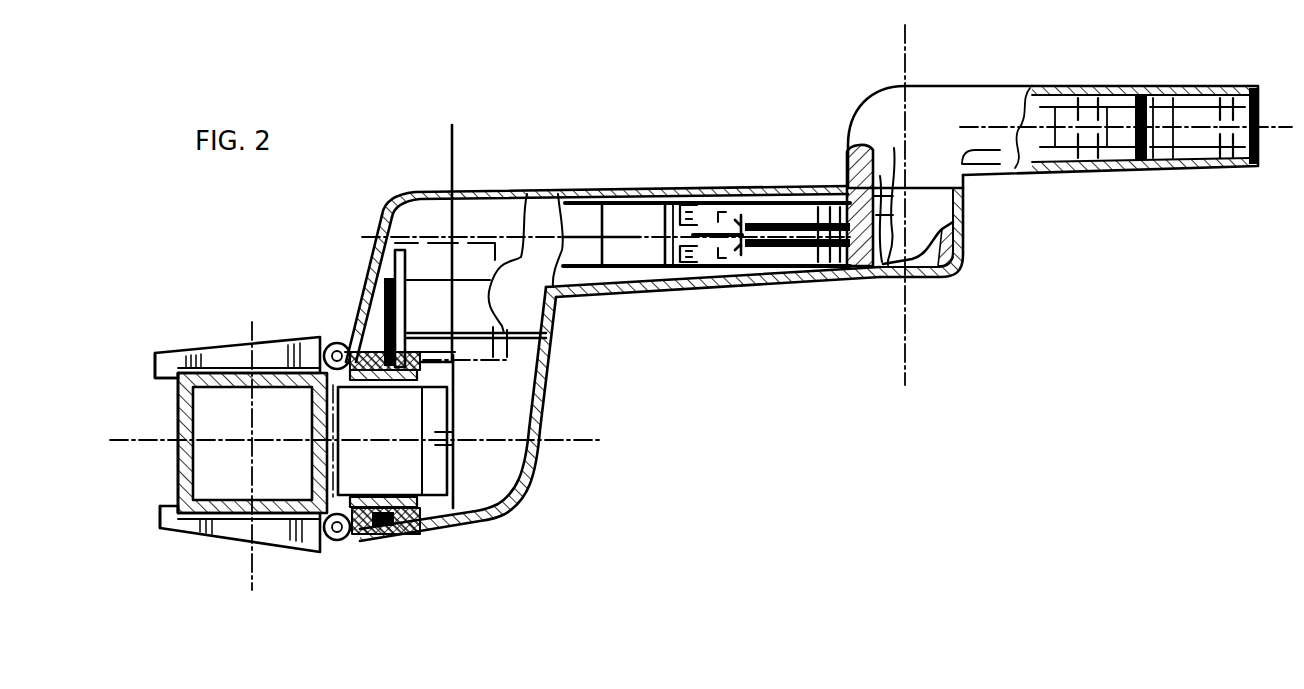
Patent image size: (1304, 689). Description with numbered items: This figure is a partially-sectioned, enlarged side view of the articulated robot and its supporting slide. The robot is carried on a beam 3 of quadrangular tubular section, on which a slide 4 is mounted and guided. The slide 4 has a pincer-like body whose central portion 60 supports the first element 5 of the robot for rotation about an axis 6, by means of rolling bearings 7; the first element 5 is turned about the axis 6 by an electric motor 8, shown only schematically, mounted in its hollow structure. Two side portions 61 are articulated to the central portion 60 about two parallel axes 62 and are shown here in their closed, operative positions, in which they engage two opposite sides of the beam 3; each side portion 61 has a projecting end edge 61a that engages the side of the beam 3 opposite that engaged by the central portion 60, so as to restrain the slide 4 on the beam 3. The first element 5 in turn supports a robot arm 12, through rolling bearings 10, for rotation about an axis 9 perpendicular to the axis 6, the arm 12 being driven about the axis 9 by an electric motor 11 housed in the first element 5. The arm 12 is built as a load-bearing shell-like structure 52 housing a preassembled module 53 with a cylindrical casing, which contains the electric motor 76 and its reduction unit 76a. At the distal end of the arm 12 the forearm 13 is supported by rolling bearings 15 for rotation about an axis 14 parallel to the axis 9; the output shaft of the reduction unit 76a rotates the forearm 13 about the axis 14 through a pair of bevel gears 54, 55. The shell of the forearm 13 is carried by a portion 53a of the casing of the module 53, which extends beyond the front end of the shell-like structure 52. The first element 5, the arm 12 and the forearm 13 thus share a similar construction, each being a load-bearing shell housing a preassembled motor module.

The beam 3 is at (180, 433).
The slide 4 is at (252, 322).
The first element 5 is at (534, 480).
The axis 6 is at (598, 440).
The rolling bearings 7 is at (386, 540).
The electric motor 8 is at (418, 465).
The axis 9 is at (455, 152).
The rolling bearings 10 is at (372, 328).
The electric motor 11 is at (428, 288).
The robot arm 12 is at (656, 183).
The forearm 13 is at (1108, 180).
The axis 14 is at (908, 318).
The rolling bearings 15 is at (892, 216).
The shell-like structure 52 is at (784, 190).
The module 53 is at (741, 266).
The portion 53a is at (955, 248).
The bevel gear 54 is at (823, 262).
The bevel gear 55 is at (894, 160).
The central portion 60 is at (318, 421).
The side portions 61 is at (218, 356).
The projecting end edge 61a is at (168, 366).
The axes 62 is at (333, 349).
The electric motor 76 is at (627, 253).
The reduction unit 76a is at (711, 253).